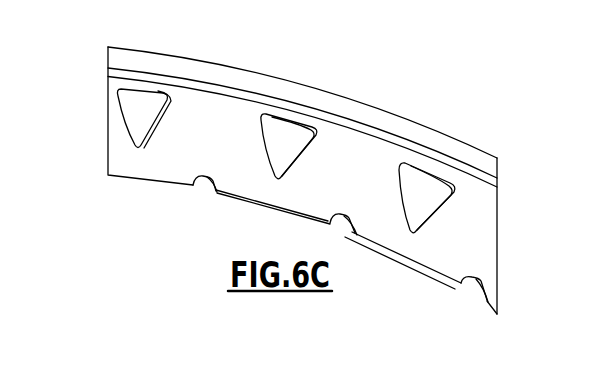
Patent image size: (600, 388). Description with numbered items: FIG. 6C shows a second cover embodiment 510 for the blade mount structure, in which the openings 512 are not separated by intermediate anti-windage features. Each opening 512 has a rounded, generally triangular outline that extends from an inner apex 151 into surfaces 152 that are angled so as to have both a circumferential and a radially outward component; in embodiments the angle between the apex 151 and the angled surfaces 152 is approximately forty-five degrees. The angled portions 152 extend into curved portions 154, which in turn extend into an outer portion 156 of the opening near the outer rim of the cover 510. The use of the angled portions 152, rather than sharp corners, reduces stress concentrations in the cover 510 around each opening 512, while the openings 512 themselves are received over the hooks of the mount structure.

The cover embodiment 510 is at (433, 103).
The openings 512 is at (425, 192).
The outer portion 156 is at (147, 88).
The curved portions 154 is at (166, 97).
The angled surfaces 152 is at (118, 101).
The inner apex 151 is at (138, 150).